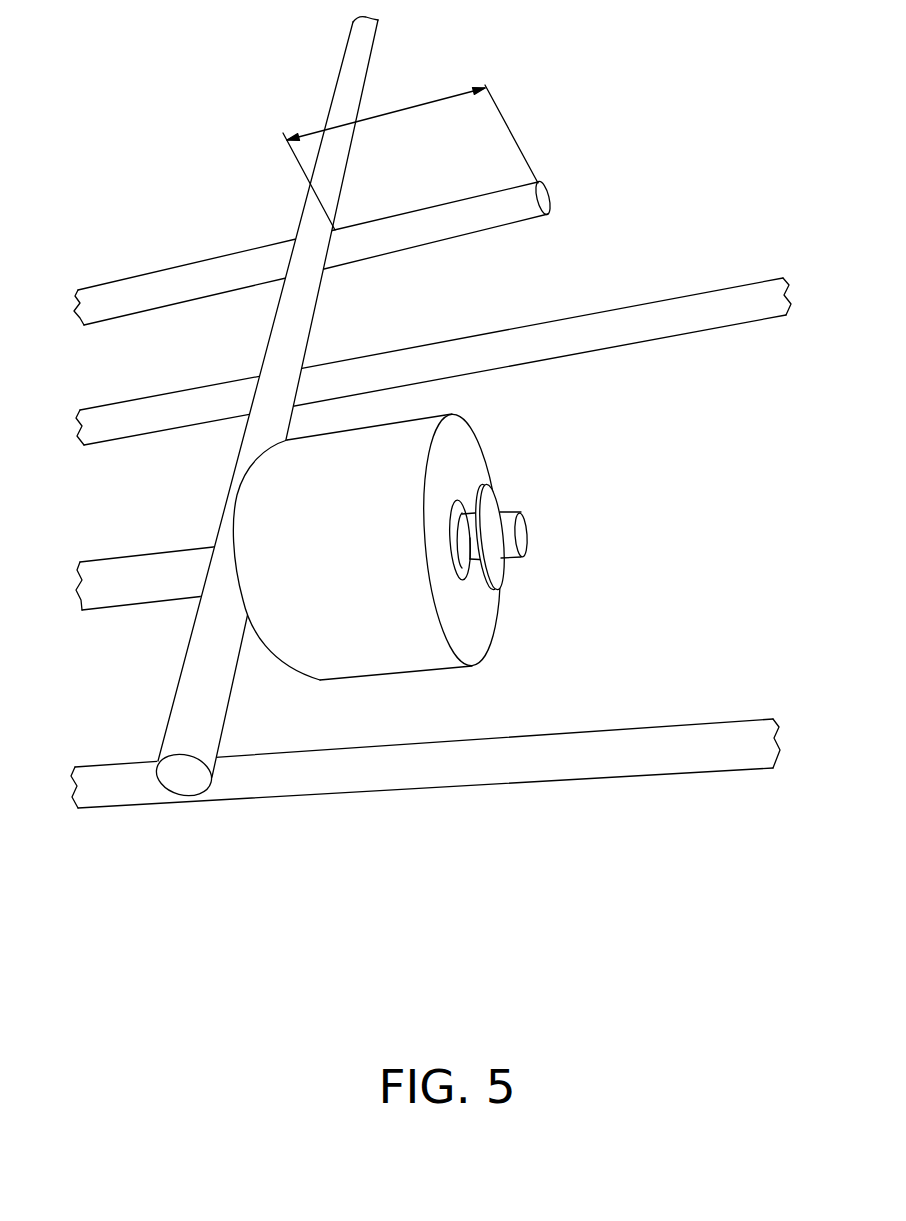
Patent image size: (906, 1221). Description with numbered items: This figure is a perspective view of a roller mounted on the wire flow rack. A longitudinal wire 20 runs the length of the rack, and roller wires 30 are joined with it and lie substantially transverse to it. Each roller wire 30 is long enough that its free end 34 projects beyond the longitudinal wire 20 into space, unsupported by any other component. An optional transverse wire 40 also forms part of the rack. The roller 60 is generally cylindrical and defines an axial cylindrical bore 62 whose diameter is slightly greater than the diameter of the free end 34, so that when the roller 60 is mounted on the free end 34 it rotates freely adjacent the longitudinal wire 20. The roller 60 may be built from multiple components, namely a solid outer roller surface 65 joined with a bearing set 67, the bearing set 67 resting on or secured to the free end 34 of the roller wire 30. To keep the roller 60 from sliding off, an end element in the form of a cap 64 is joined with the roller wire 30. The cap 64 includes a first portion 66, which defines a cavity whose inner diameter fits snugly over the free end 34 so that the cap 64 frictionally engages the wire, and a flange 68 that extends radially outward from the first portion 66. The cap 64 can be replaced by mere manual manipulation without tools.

The longitudinal wire 20 is at (305, 252).
The roller wire 30 is at (173, 288).
The free end of the roller wire 34 is at (388, 115).
The transverse wire 40 is at (633, 327).
The roller 60 is at (389, 553).
The axial cylindrical bore 62 is at (457, 543).
The cap 64 is at (627, 534).
The solid outer roller surface 65 is at (460, 450).
The first portion of the cap 66 is at (507, 510).
The bearing set 67 is at (457, 497).
The flange 68 is at (497, 498).